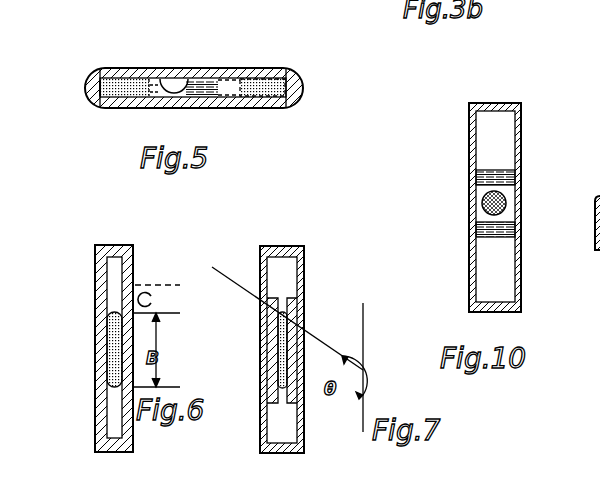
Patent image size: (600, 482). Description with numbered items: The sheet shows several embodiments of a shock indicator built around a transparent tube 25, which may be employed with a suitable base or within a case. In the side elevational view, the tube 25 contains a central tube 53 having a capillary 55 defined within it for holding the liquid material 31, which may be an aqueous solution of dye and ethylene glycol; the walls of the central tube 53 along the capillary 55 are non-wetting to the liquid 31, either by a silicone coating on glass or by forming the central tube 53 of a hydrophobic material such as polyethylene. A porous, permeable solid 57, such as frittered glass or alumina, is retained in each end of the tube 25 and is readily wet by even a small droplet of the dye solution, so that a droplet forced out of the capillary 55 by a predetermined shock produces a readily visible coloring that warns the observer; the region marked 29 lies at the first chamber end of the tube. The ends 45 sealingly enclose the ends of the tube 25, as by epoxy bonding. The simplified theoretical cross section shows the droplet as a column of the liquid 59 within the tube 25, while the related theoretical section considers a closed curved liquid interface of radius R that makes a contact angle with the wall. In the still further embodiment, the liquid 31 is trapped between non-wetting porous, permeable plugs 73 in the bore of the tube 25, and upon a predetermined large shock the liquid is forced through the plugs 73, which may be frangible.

In FIG. 5, the tube 25 is at (125, 68).
In FIG. 6, the tube 25 is at (95, 290).
In FIG. 7, the tube 25 is at (282, 349).
In FIG. 10, the tube 25 is at (522, 147).
In FIG. 5, the first chamber filling 29 is at (222, 97).
In FIG. 5, the liquid material 31 is at (214, 90).
In FIG. 10, the liquid material 31 is at (482, 201).
In FIG. 5, the ends 45 is at (97, 97).
In FIG. 5, the central tube 53 is at (192, 78).
In FIG. 5, the capillary 55 is at (160, 78).
In FIG. 5, the porous, permeable solid 57 is at (268, 79).
In FIG. 6, the column of the liquid 59 is at (110, 347).
In FIG. 10, the non-wetting porous, permeable plugs 73 is at (490, 172).
In FIG. 7, the radius R is at (280, 311).